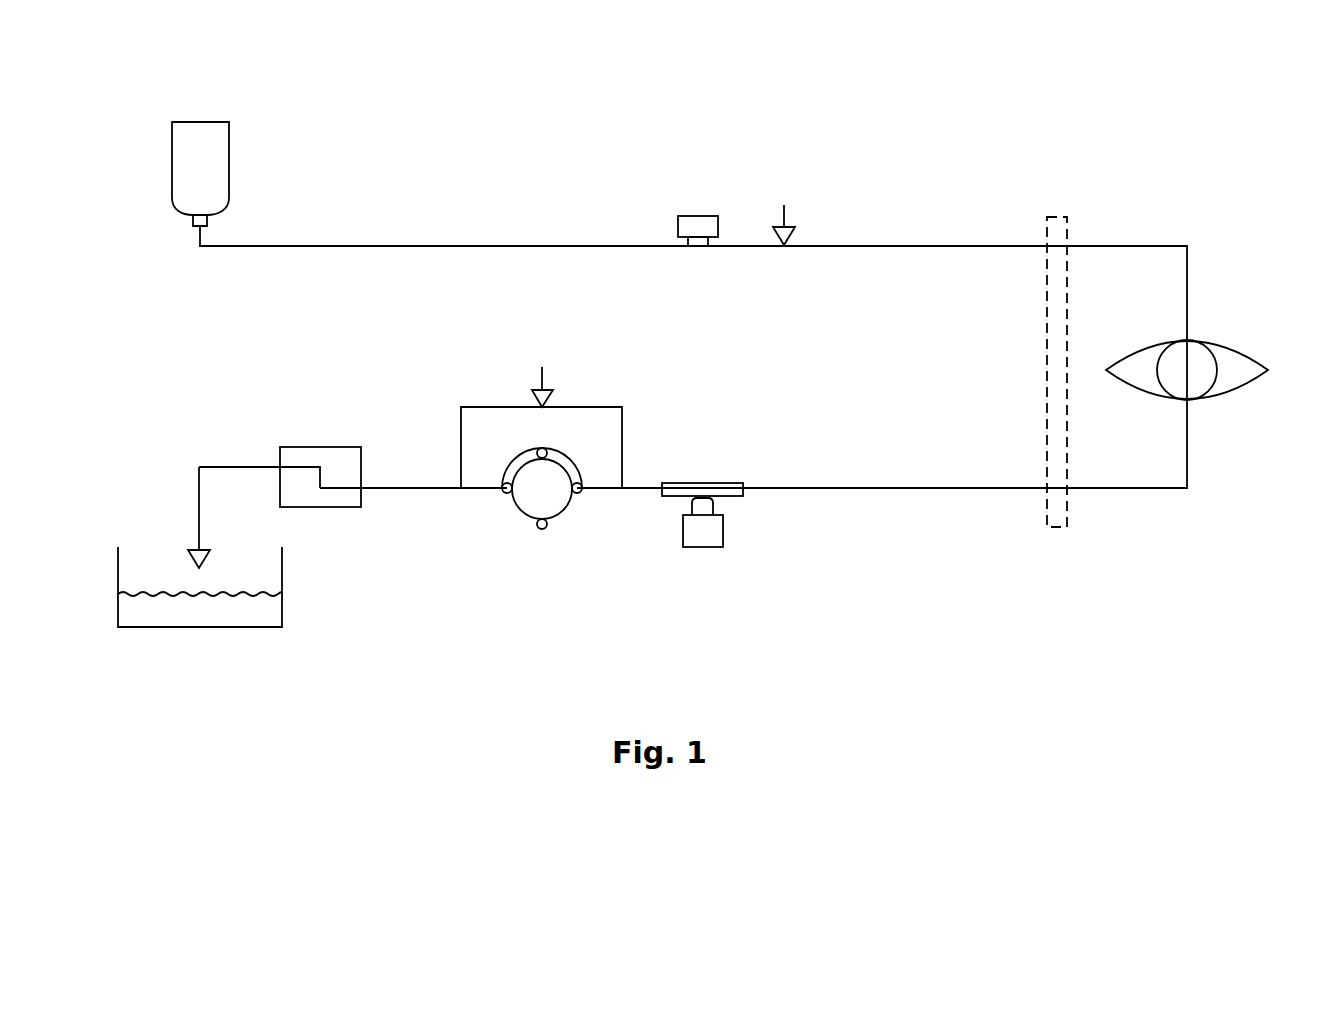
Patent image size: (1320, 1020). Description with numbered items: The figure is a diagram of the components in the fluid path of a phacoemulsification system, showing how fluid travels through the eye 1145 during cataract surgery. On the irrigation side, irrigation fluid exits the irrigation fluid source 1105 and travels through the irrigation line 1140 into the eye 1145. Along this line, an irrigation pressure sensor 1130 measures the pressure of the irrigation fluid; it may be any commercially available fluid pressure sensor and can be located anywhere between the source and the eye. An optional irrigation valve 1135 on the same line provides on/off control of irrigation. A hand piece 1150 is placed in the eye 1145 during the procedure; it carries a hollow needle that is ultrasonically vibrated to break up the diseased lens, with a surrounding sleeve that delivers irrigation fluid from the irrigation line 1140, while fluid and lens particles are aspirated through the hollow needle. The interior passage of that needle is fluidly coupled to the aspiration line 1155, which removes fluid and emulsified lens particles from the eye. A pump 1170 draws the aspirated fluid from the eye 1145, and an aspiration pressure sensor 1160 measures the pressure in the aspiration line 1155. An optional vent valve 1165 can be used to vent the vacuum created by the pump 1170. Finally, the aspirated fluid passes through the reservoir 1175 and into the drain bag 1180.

The irrigation fluid source 1105 is at (231, 145).
The irrigation pressure sensor 1130 is at (694, 213).
The irrigation valve 1135 is at (788, 216).
The irrigation line 1140 is at (962, 244).
The hand piece 1150 is at (1069, 214).
The eye 1145 is at (1224, 397).
The aspiration line 1155 is at (904, 490).
The aspiration pressure sensor 1160 is at (725, 548).
The vent valve 1165 is at (545, 371).
The pump 1170 is at (536, 489).
The reservoir 1175 is at (339, 443).
The drain bag 1180 is at (284, 609).